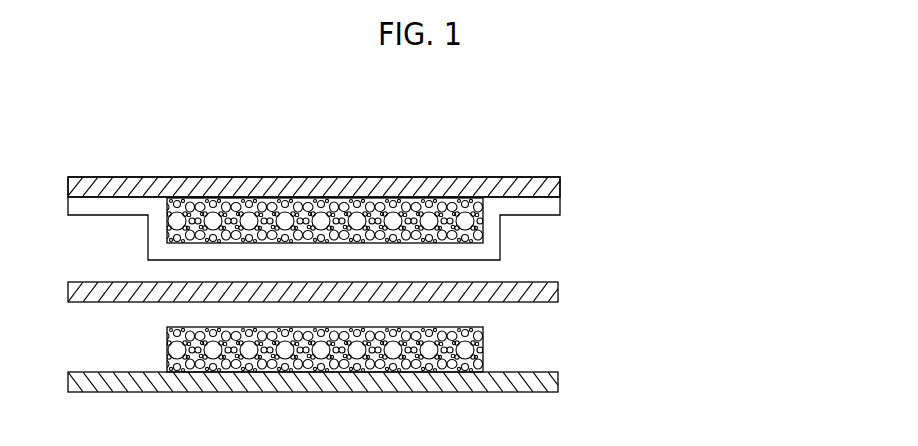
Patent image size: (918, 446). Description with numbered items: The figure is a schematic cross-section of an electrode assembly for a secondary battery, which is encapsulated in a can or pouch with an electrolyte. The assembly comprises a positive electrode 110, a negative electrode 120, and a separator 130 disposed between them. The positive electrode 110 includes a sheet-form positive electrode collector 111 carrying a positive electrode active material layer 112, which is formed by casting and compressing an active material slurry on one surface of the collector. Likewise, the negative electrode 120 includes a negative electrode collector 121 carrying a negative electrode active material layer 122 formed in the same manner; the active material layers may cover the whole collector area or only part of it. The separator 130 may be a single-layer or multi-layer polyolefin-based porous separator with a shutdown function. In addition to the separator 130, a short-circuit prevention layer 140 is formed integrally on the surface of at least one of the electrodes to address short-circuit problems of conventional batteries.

The positive electrode 110 is at (422, 356).
The positive electrode collector 111 is at (556, 383).
The positive electrode active material layer 112 is at (483, 340).
The negative electrode 120 is at (409, 185).
The negative electrode collector 121 is at (548, 179).
The negative electrode active material layer 122 is at (443, 193).
The separator 130 is at (556, 290).
The short-circuit prevention layer 140 is at (497, 240).